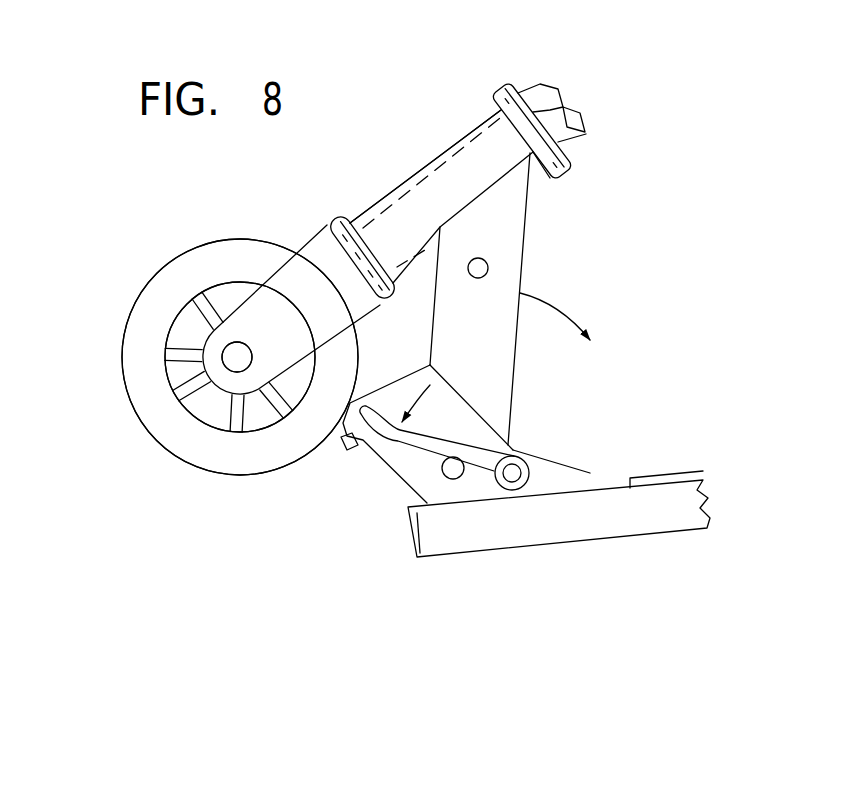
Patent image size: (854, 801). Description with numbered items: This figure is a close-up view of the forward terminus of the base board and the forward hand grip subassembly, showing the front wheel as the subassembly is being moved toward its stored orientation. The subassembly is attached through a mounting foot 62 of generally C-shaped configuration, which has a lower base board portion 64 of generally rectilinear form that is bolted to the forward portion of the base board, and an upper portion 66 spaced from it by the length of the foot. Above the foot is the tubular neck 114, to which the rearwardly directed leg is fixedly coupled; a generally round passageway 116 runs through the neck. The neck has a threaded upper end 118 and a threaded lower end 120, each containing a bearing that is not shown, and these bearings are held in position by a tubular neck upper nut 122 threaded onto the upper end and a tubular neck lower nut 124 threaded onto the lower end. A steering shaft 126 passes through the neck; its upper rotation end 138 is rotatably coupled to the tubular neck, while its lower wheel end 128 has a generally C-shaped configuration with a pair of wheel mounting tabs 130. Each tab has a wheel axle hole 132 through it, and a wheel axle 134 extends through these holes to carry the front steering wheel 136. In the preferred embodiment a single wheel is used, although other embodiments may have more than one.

The mounting foot 62 is at (467, 418).
The lower base board portion 64 is at (560, 487).
The upper portion 66 is at (545, 457).
The tubular neck 114 is at (477, 123).
The round passageway 116 is at (453, 152).
The threaded upper end 118 is at (562, 141).
The threaded lower end 120 is at (328, 216).
The tubular neck upper nut 122 is at (562, 107).
The tubular neck lower nut 124 is at (313, 233).
The steering shaft 126 is at (420, 213).
The lower wheel end 128 is at (195, 233).
The wheel mounting tabs 130 is at (217, 300).
The wheel axle hole 132 is at (240, 371).
The wheel axle 134 is at (232, 366).
The front steering wheel 136 is at (148, 330).
The upper rotation end 138 is at (555, 89).